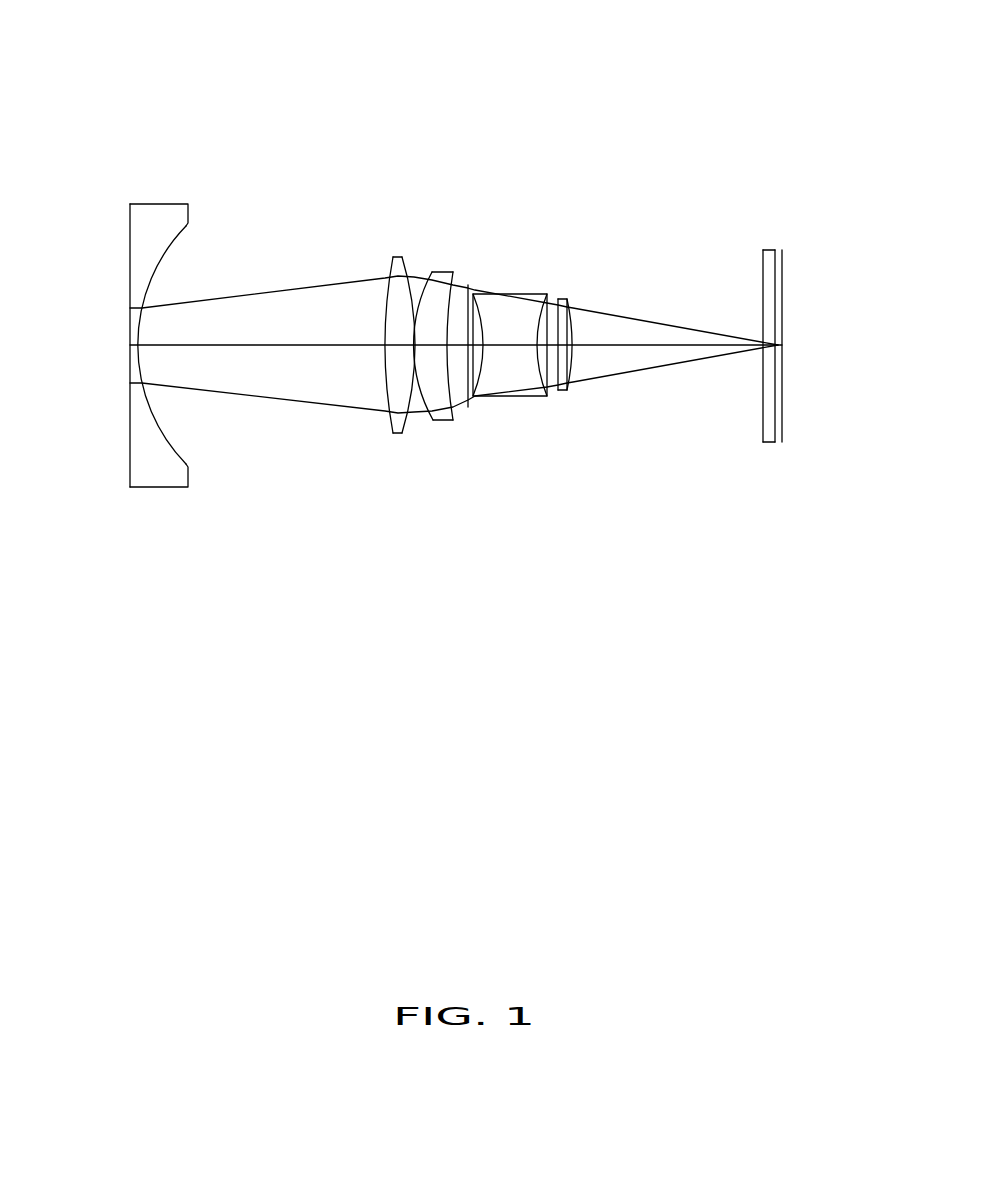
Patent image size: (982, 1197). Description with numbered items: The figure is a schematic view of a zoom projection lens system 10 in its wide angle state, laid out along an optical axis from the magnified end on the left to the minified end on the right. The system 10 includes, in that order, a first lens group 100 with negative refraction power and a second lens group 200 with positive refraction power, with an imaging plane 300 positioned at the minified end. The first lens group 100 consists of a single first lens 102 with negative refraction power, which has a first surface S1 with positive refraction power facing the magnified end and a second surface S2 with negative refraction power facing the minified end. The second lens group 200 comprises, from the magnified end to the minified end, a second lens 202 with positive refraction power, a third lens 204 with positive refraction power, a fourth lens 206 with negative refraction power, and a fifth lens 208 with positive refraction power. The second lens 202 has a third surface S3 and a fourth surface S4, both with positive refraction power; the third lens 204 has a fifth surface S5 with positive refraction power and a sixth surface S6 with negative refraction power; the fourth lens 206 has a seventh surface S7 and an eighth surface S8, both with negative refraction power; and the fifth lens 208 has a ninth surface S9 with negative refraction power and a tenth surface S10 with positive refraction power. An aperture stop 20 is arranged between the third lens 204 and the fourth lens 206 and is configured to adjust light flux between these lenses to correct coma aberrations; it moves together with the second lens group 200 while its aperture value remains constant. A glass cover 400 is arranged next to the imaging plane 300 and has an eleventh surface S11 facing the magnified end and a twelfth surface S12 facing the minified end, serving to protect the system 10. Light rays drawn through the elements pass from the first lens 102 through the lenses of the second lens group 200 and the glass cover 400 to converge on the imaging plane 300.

The zoom projection lens system 10 is at (508, 28).
The first lens group 100 is at (149, 176).
The first lens 102 is at (162, 220).
The second lens group 200 is at (592, 168).
The second lens 202 is at (398, 257).
The third lens 204 is at (447, 273).
The fourth lens 206 is at (527, 297).
The fifth lens 208 is at (563, 298).
The aperture stop 20 is at (469, 292).
The imaging plane 300 is at (783, 276).
The glass cover 400 is at (765, 265).
The first surface S1 is at (130, 235).
The second surface S2 is at (172, 245).
The third surface S3 is at (390, 413).
The fourth surface S4 is at (404, 426).
The fifth surface S5 is at (427, 421).
The sixth surface S6 is at (455, 416).
The seventh surface S7 is at (482, 378).
The eighth surface S8 is at (540, 376).
The ninth surface S9 is at (556, 382).
The tenth surface S10 is at (573, 355).
The eleventh surface S11 is at (762, 418).
The twelfth surface S12 is at (776, 444).